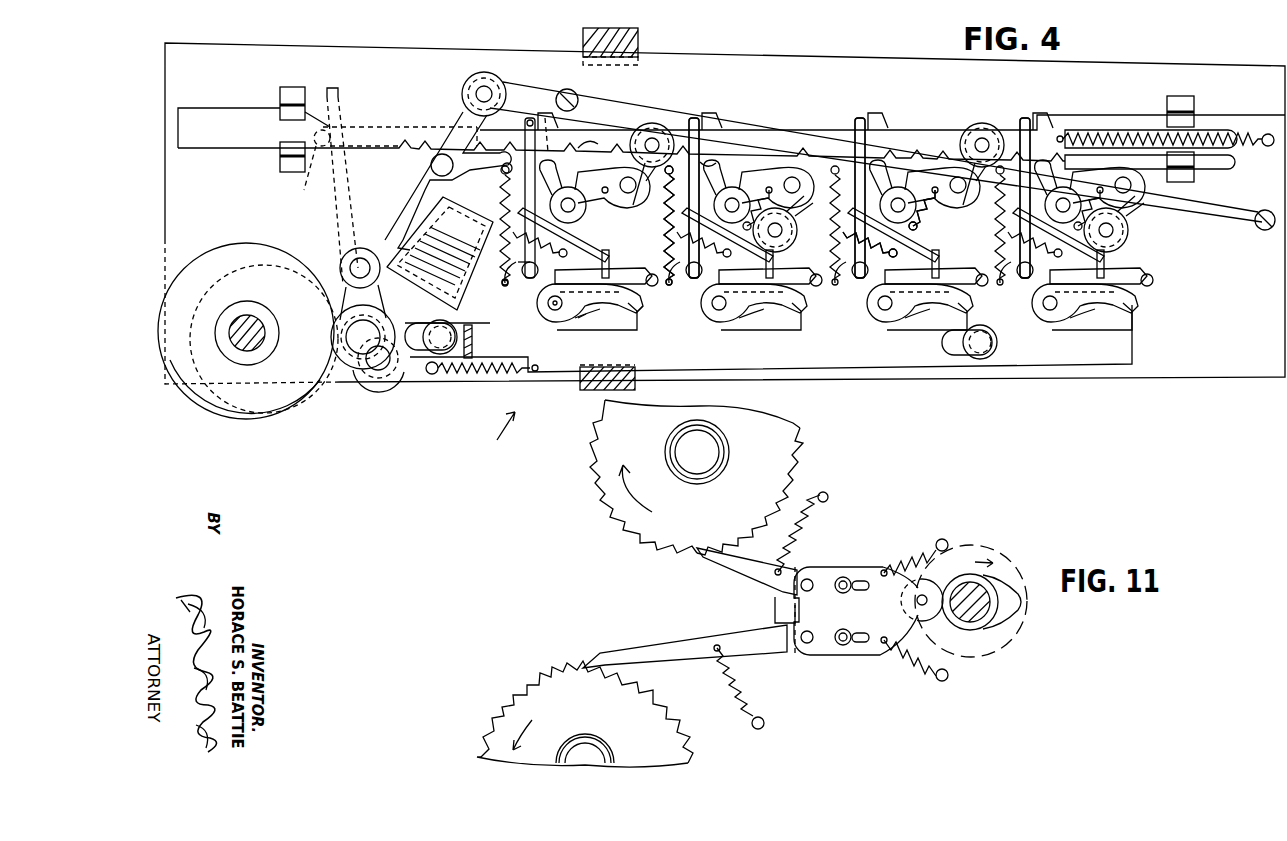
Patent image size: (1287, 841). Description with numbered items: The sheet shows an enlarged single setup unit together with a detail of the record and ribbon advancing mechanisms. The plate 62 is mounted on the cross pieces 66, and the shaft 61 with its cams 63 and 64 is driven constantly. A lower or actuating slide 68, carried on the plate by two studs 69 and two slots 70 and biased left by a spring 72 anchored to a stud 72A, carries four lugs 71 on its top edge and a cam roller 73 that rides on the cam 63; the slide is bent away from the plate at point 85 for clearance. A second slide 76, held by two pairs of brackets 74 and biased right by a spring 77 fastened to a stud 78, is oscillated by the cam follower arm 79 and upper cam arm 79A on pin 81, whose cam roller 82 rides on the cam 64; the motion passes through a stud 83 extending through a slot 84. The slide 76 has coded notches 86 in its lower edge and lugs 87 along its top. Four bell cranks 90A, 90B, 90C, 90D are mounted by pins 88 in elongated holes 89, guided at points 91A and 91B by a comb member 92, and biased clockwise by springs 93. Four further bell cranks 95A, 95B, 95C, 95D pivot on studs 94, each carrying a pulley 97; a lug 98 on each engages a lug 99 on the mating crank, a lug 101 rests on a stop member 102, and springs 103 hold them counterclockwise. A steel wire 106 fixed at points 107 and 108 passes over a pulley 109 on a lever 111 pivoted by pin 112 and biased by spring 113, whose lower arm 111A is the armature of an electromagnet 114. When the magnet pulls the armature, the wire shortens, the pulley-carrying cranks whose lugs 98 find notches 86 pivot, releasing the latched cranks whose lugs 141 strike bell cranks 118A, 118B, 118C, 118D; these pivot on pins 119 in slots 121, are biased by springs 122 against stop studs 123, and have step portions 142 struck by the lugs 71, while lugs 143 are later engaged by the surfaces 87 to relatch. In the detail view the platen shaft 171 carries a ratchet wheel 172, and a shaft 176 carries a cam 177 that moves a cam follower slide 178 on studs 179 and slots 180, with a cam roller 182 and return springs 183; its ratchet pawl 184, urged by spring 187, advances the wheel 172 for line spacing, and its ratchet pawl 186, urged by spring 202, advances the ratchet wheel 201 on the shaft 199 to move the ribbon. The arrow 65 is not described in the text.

In FIG. 4, the shaft 61 is at (247, 324).
In FIG. 4, the plate 62 is at (852, 66).
In FIG. 4, the cam 63 is at (218, 246).
In FIG. 4, the cam 64 is at (272, 420).
In FIG. 4, the adding mechanism 65 is at (500, 436).
In FIG. 4, the cross pieces 66 is at (638, 44).
In FIG. 4, the lower or actuating slide 68 is at (842, 368).
In FIG. 4, the studs 69 is at (448, 330).
In FIG. 4, the slots 70 is at (420, 350).
In FIG. 4, the lugs 71 is at (640, 325).
In FIG. 4, the spring 72 is at (485, 376).
In FIG. 4, the stud 72A is at (436, 376).
In FIG. 4, the cam roller 73 is at (350, 368).
In FIG. 4, the brackets 74 is at (283, 148).
In FIG. 4, the second slide 76 is at (785, 130).
In FIG. 4, the spring 77 is at (1240, 147).
In FIG. 4, the stud 78 is at (1267, 133).
In FIG. 4, the cam follower arm 79 is at (338, 280).
In FIG. 4, the upper cam arm 79A is at (337, 176).
In FIG. 4, the pin 81 is at (370, 278).
In FIG. 4, the cam roller 82 is at (384, 385).
In FIG. 4, the stud 83 is at (311, 170).
In FIG. 4, the slot 84 is at (365, 126).
In FIG. 4, the bent point 85 is at (482, 341).
In FIG. 4, the coded notches 86 is at (575, 150).
In FIG. 4, the lugs 87 is at (562, 118).
In FIG. 4, the pins 88 is at (528, 280).
In FIG. 4, the elongated holes 89 is at (512, 278).
In FIG. 4, the bell crank 90A is at (500, 134).
In FIG. 4, the bell crank 90B is at (712, 132).
In FIG. 4, the bell crank 90C is at (856, 188).
In FIG. 4, the bell crank 90D is at (1022, 200).
In FIG. 4, the guide point 91A is at (598, 262).
In FIG. 4, the guide point 91B is at (502, 210).
In FIG. 4, the comb member 92 is at (570, 240).
In FIG. 4, the spring 93 is at (490, 287).
In FIG. 4, the studs 94 is at (640, 184).
In FIG. 4, the bell crank 95A is at (640, 202).
In FIG. 4, the bell crank 95B is at (800, 205).
In FIG. 4, the bell crank 95C is at (965, 215).
In FIG. 4, the bell crank 95D is at (1138, 212).
In FIG. 4, the pulley 97 is at (648, 124).
In FIG. 4, the lug 98 is at (742, 158).
In FIG. 4, the lug 99 is at (712, 158).
In FIG. 4, the lug 101 is at (813, 191).
In FIG. 4, the stop member 102 is at (898, 250).
In FIG. 4, the springs 103 is at (915, 216).
In FIG. 4, the steel wire 106 is at (507, 84).
In FIG. 4, the point 107 is at (578, 98).
In FIG. 4, the point 108 is at (1262, 230).
In FIG. 4, the pulley 109 is at (481, 76).
In FIG. 4, the lever 111 is at (455, 118).
In FIG. 4, the lower arm 111A is at (410, 210).
In FIG. 4, the pin 112 is at (430, 166).
In FIG. 4, the spring 113 is at (502, 170).
In FIG. 4, the electromagnet 114 is at (418, 237).
In FIG. 4, the bell crank 118A is at (607, 318).
In FIG. 4, the bell crank 118B is at (772, 320).
In FIG. 4, the bell crank 118C is at (930, 290).
In FIG. 4, the bell crank 118D is at (1095, 322).
In FIG. 4, the pins 119 is at (555, 312).
In FIG. 4, the slots 121 is at (580, 318).
In FIG. 4, the springs 122 is at (668, 236).
In FIG. 4, the stop studs 123 is at (652, 273).
In FIG. 4, the lugs 141 is at (618, 250).
In FIG. 4, the step portions 142 is at (642, 306).
In FIG. 4, the lugs 143 is at (530, 118).
In FIG. 11, the platen shaft 171 is at (710, 458).
In FIG. 11, the ratchet wheel 172 is at (785, 474).
In FIG. 11, the shaft 176 is at (990, 612).
In FIG. 11, the cam 177 is at (980, 622).
In FIG. 11, the cam follower slide 178 is at (838, 568).
In FIG. 11, the studs 179 is at (843, 603).
In FIG. 11, the slots 180 is at (866, 632).
In FIG. 11, the cam roller 182 is at (930, 590).
In FIG. 11, the springs 183 is at (920, 550).
In FIG. 11, the ratchet pawl 184 is at (735, 576).
In FIG. 11, the ratchet pawl 186 is at (694, 646).
In FIG. 11, the spring 187 is at (813, 524).
In FIG. 11, the shaft 199 is at (586, 762).
In FIG. 11, the ratchet wheel 201 is at (515, 698).
In FIG. 11, the spring 202 is at (748, 690).